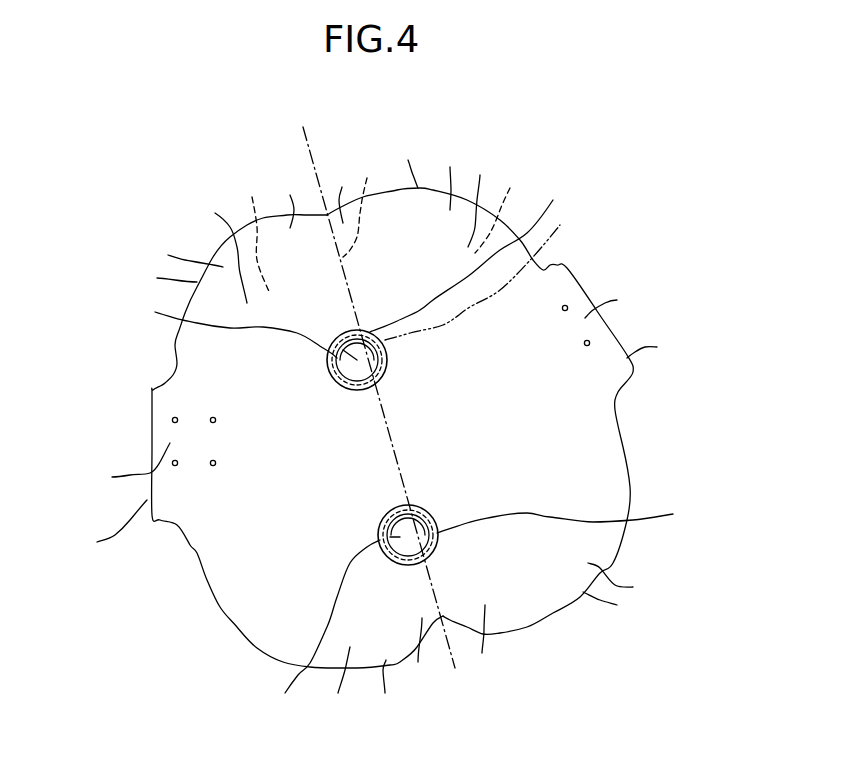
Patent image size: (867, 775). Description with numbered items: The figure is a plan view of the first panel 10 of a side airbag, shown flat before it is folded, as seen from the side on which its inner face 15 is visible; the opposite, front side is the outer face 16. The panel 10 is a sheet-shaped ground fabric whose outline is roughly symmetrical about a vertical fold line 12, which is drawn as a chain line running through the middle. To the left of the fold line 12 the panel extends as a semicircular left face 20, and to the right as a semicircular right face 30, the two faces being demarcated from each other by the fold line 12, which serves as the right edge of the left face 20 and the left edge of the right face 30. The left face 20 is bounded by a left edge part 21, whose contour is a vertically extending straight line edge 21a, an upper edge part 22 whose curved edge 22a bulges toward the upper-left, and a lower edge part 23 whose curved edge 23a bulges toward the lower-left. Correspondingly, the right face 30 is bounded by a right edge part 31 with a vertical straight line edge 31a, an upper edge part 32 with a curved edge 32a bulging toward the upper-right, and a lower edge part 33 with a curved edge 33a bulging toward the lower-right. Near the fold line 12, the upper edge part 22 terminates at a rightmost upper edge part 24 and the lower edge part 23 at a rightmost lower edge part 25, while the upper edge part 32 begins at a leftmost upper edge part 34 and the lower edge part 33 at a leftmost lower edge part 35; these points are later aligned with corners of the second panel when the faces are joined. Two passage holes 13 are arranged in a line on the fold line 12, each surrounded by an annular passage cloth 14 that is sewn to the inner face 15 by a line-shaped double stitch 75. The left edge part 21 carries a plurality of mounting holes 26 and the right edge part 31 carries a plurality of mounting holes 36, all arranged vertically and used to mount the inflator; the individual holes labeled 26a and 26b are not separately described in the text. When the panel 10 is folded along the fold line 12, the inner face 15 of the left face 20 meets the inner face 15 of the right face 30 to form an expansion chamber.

The panel 10 is at (112, 174).
The fold line 12 is at (379, 397).
The passage hole 13 is at (252, 510).
The annular passage cloth 14 is at (536, 357).
The inner face 15 is at (353, 225).
The outer face 16 is at (384, 229).
The left face 20 is at (285, 517).
The left edge part 21 is at (126, 468).
The straight line edge 21a is at (102, 528).
The upper edge part 22 is at (183, 255).
The curved edge 22a is at (157, 279).
The lower edge part 23 is at (340, 685).
The curved edge 23a is at (388, 691).
The rightmost upper edge part 24 is at (291, 197).
The rightmost lower edge part 25 is at (421, 655).
The mounting holes 26 is at (142, 417).
The mounting hole 26a is at (175, 416).
The mounting hole 26b is at (213, 416).
The right face 30 is at (548, 445).
The right edge part 31 is at (614, 303).
The straight line edge 31a is at (662, 347).
The upper edge part 32 is at (448, 174).
The curved edge 32a is at (410, 157).
The lower edge part 33 is at (624, 583).
The curved edge 33a is at (618, 607).
The leftmost upper edge part 34 is at (344, 192).
The leftmost lower edge part 35 is at (486, 644).
The mounting holes 36 is at (566, 305).
The double stitch 75 is at (486, 275).